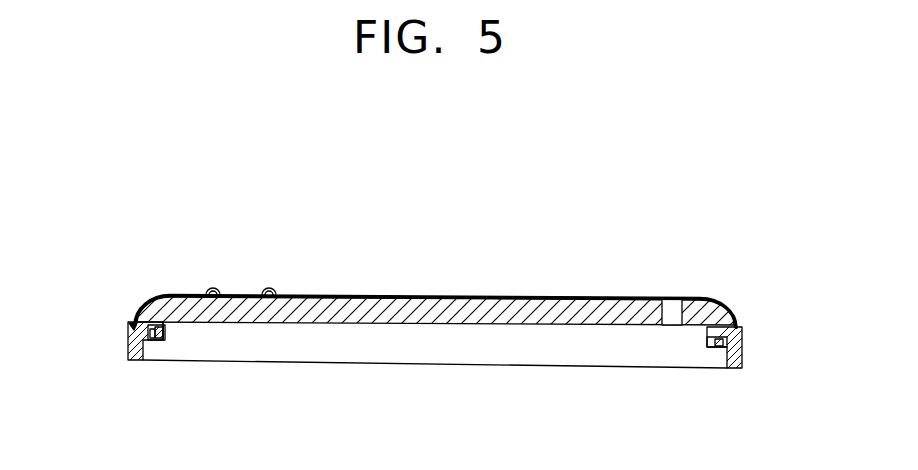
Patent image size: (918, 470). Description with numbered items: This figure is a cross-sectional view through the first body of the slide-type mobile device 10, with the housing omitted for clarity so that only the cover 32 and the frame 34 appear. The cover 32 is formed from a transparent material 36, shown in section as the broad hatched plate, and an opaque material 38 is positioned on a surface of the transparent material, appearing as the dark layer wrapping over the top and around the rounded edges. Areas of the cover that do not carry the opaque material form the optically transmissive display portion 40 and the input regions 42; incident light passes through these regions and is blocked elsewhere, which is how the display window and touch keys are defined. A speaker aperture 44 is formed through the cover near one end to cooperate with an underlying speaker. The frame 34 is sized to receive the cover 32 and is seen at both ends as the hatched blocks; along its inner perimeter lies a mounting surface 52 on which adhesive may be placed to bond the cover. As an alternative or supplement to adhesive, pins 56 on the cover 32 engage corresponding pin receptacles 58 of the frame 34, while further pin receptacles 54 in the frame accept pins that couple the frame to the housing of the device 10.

The mobile device 10 is at (728, 210).
The cover 32 is at (737, 302).
The frame 34 is at (130, 334).
The transparent material 36 is at (427, 320).
The opaque material 38 is at (168, 291).
The display portion 40 is at (563, 296).
The input regions 42 is at (215, 288).
The speaker aperture 44 is at (672, 305).
The mounting surface 52 is at (131, 321).
The pin receptacles 54 is at (718, 347).
The pins 56 is at (155, 340).
The pin receptacles 58 is at (164, 339).